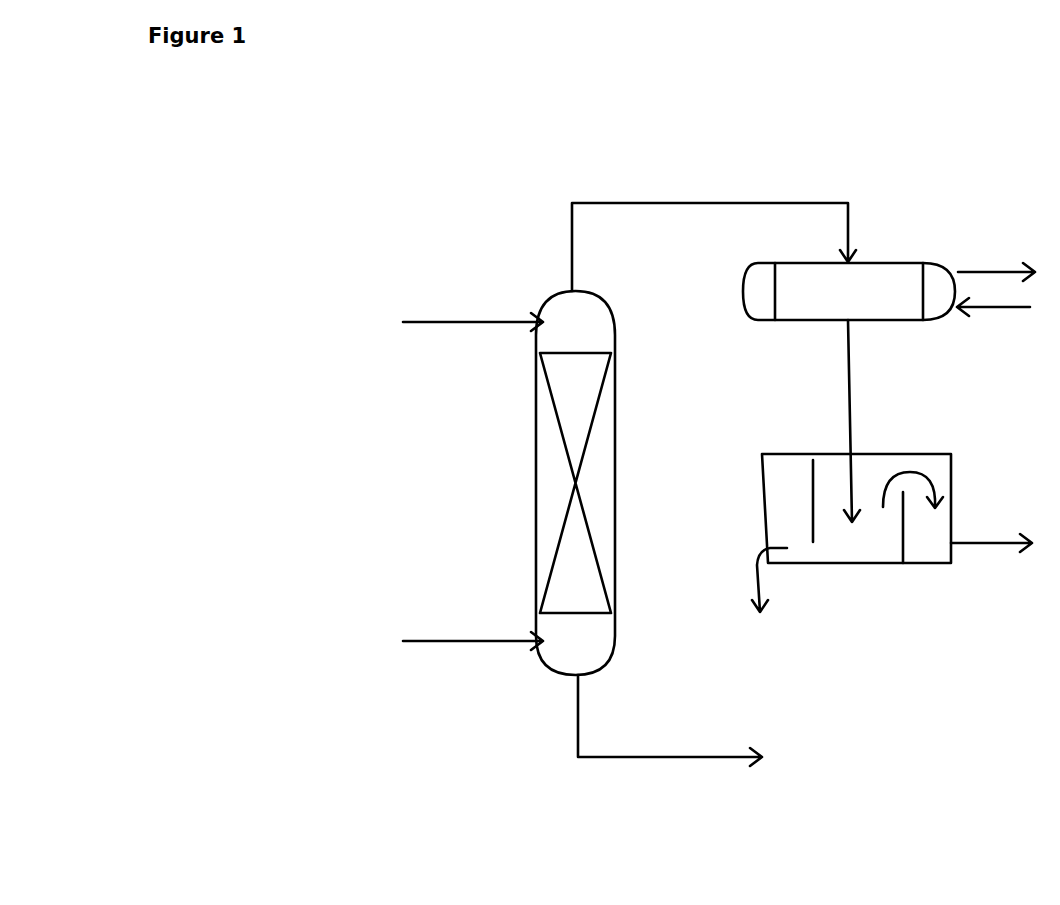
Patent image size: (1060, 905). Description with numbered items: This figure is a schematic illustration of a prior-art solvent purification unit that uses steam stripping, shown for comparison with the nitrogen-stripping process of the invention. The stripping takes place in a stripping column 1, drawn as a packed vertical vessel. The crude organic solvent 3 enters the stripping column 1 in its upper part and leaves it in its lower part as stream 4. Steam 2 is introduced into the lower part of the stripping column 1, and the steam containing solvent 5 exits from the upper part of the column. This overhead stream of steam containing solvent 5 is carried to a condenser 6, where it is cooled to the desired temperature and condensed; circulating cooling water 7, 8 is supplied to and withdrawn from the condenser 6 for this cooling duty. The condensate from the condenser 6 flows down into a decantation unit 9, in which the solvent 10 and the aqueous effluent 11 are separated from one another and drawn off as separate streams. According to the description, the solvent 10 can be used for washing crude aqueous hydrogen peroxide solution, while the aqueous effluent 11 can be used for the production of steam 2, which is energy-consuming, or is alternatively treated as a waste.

The stripping column 1 is at (550, 483).
The steam 2 is at (473, 629).
The crude organic solvent 3 is at (473, 308).
The stream 4 is at (670, 720).
The steam containing solvent 5 is at (714, 229).
The condenser 6 is at (849, 274).
The circulating cooling water 7 is at (999, 255).
The circulating cooling water 8 is at (1000, 323).
The decantation unit 9 is at (967, 462).
The solvent 10 is at (991, 571).
The aqueous effluent 11 is at (768, 602).